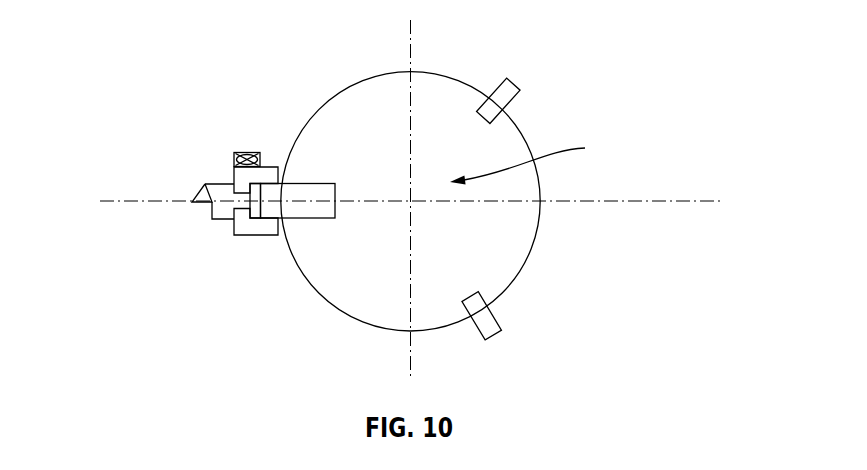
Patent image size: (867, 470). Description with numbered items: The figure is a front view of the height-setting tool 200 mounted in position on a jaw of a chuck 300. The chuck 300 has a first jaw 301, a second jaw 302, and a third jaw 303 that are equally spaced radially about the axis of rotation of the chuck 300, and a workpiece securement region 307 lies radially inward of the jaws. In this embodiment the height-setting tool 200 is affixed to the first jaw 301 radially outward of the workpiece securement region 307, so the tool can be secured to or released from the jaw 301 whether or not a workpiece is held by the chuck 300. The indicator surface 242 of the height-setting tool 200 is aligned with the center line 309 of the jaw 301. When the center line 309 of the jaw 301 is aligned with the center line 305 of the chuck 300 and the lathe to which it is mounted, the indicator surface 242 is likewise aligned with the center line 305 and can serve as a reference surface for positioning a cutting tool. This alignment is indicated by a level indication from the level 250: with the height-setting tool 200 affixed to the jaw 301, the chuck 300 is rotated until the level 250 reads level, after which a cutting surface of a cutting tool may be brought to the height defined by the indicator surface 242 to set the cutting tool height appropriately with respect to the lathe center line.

The height-setting tool 200 is at (274, 146).
The indicator surface 242 is at (204, 203).
The level 250 is at (249, 155).
The chuck 300 is at (457, 92).
The first jaw 301 is at (325, 182).
The second jaw 302 is at (491, 121).
The third jaw 303 is at (490, 338).
The center line of the chuck 305 is at (115, 201).
The workpiece securement region 307 is at (538, 162).
The center line of the jaw 309 is at (215, 202).